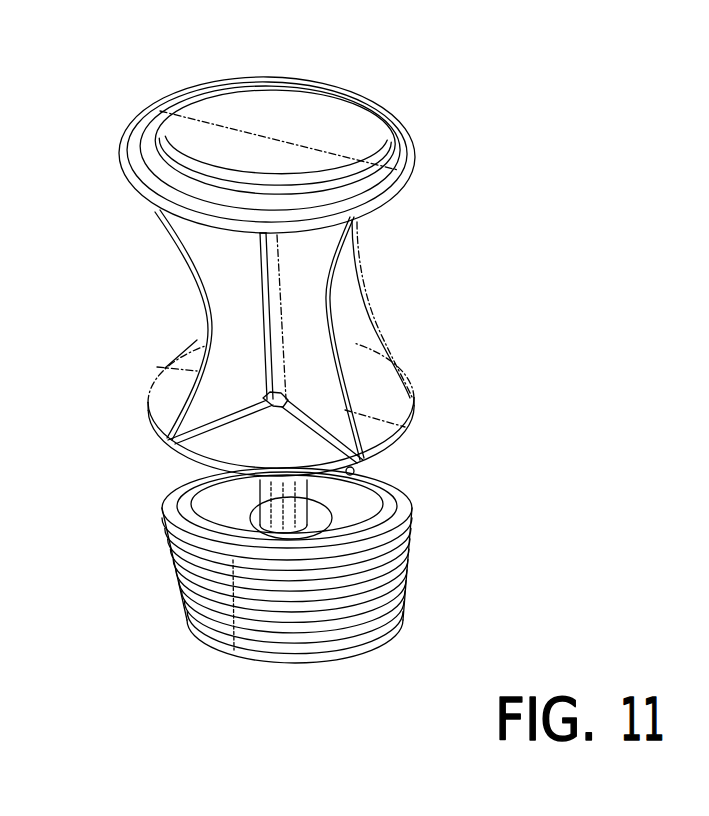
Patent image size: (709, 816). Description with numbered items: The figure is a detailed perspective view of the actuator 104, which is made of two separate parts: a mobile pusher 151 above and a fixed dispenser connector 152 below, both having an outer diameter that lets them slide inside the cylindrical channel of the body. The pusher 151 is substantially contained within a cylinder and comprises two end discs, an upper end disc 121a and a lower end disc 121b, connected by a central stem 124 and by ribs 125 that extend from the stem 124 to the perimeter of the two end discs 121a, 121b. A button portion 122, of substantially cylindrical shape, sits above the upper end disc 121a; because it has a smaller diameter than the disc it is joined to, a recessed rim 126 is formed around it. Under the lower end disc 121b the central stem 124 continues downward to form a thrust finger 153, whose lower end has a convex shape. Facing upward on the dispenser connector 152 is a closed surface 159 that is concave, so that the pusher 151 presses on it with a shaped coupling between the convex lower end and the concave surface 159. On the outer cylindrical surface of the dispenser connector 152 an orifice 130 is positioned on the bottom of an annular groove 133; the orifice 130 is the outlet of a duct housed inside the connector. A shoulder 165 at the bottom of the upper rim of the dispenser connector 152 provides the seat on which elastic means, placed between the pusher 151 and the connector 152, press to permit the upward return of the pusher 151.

The actuator 104 is at (458, 393).
The upper end disc 121a is at (403, 163).
The lower end disc 121b is at (375, 427).
The button portion 122 is at (333, 112).
The recessed rim 126 is at (398, 119).
The central stem 124 is at (272, 285).
The ribs 125 is at (210, 273).
The pusher 151 is at (372, 317).
The dispenser connector 152 is at (418, 550).
The thrust finger 153 is at (308, 490).
The closed surface 159 is at (252, 500).
The shoulder 165 is at (215, 555).
The orifice 130 is at (413, 594).
The annular groove 133 is at (283, 613).